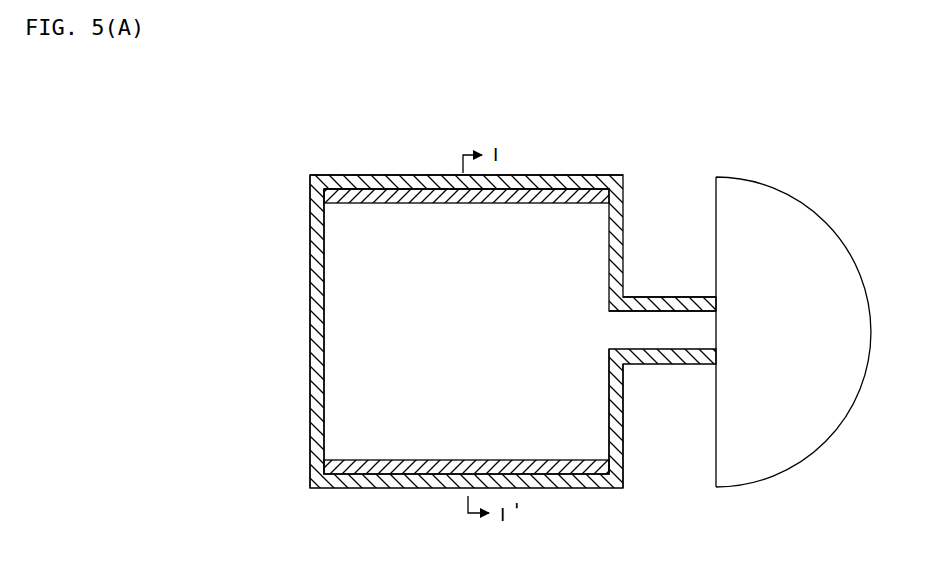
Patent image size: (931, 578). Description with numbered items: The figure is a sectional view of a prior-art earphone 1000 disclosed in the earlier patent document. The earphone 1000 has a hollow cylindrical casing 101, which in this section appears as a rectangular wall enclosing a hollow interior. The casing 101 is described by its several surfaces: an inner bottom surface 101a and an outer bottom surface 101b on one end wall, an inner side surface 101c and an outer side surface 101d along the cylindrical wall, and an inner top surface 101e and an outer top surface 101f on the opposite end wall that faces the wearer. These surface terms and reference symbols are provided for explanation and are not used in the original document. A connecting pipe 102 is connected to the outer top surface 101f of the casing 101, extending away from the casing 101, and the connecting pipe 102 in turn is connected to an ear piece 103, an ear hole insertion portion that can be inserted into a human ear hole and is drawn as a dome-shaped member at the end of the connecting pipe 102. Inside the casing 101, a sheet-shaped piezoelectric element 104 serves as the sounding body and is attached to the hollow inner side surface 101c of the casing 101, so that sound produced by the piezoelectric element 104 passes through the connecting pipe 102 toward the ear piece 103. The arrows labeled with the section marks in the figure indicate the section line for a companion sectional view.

The earphone 1000 is at (234, 100).
The casing 101 is at (533, 177).
The inner bottom surface 101a is at (325, 334).
The outer bottom surface 101b is at (309, 334).
The inner side surface 101c is at (433, 192).
The outer side surface 101d is at (435, 174).
The inner top surface 101e is at (608, 418).
The outer top surface 101f is at (624, 418).
The connecting pipe 102 is at (664, 298).
The ear piece 103 is at (778, 220).
The sheet-shaped piezoelectric element 104 is at (535, 193).